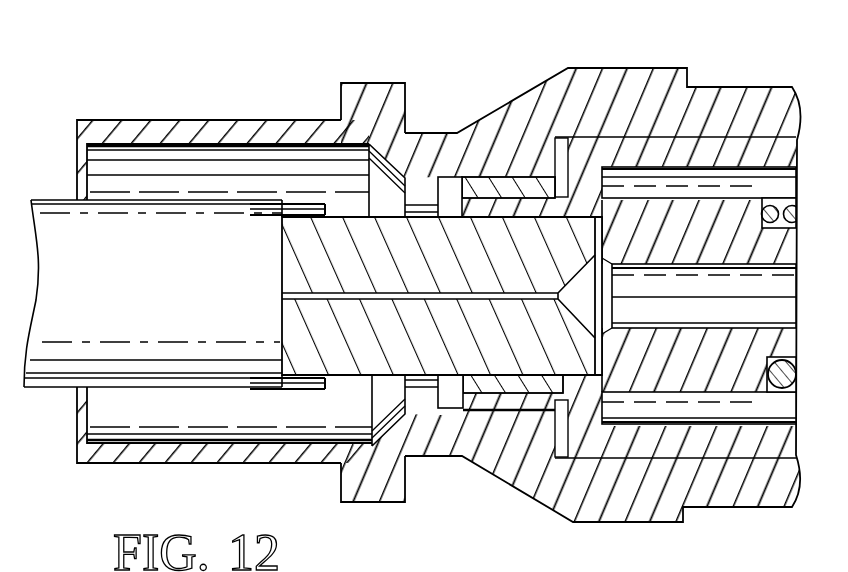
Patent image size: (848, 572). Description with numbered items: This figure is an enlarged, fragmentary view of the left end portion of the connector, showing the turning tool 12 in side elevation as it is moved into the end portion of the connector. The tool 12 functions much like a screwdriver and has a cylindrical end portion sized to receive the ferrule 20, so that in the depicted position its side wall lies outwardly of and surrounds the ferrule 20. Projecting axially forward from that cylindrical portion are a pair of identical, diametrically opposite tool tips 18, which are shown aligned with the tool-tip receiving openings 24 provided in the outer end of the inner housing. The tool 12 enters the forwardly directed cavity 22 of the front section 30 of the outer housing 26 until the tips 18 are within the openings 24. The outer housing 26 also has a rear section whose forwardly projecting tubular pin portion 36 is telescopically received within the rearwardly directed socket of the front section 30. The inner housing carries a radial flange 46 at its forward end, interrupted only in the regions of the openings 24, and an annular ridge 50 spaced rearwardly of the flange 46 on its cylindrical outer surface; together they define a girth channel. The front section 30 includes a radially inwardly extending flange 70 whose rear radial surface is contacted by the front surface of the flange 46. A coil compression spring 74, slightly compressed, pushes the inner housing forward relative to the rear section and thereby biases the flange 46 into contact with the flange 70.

The turning tool 12 is at (88, 288).
The tool tips 18 is at (291, 200).
The ferrule 20 is at (300, 311).
The cavity 22 is at (213, 163).
The tool-tip receiving openings 24 is at (410, 209).
The outer housing 26 is at (149, 482).
The front section 30 is at (142, 122).
The tubular pin portion 36 is at (657, 440).
The radial flange 46 is at (454, 186).
The annular ridge 50 is at (576, 152).
The radially inwardly extending flange 70 is at (413, 178).
The coil compression spring 74 is at (800, 372).